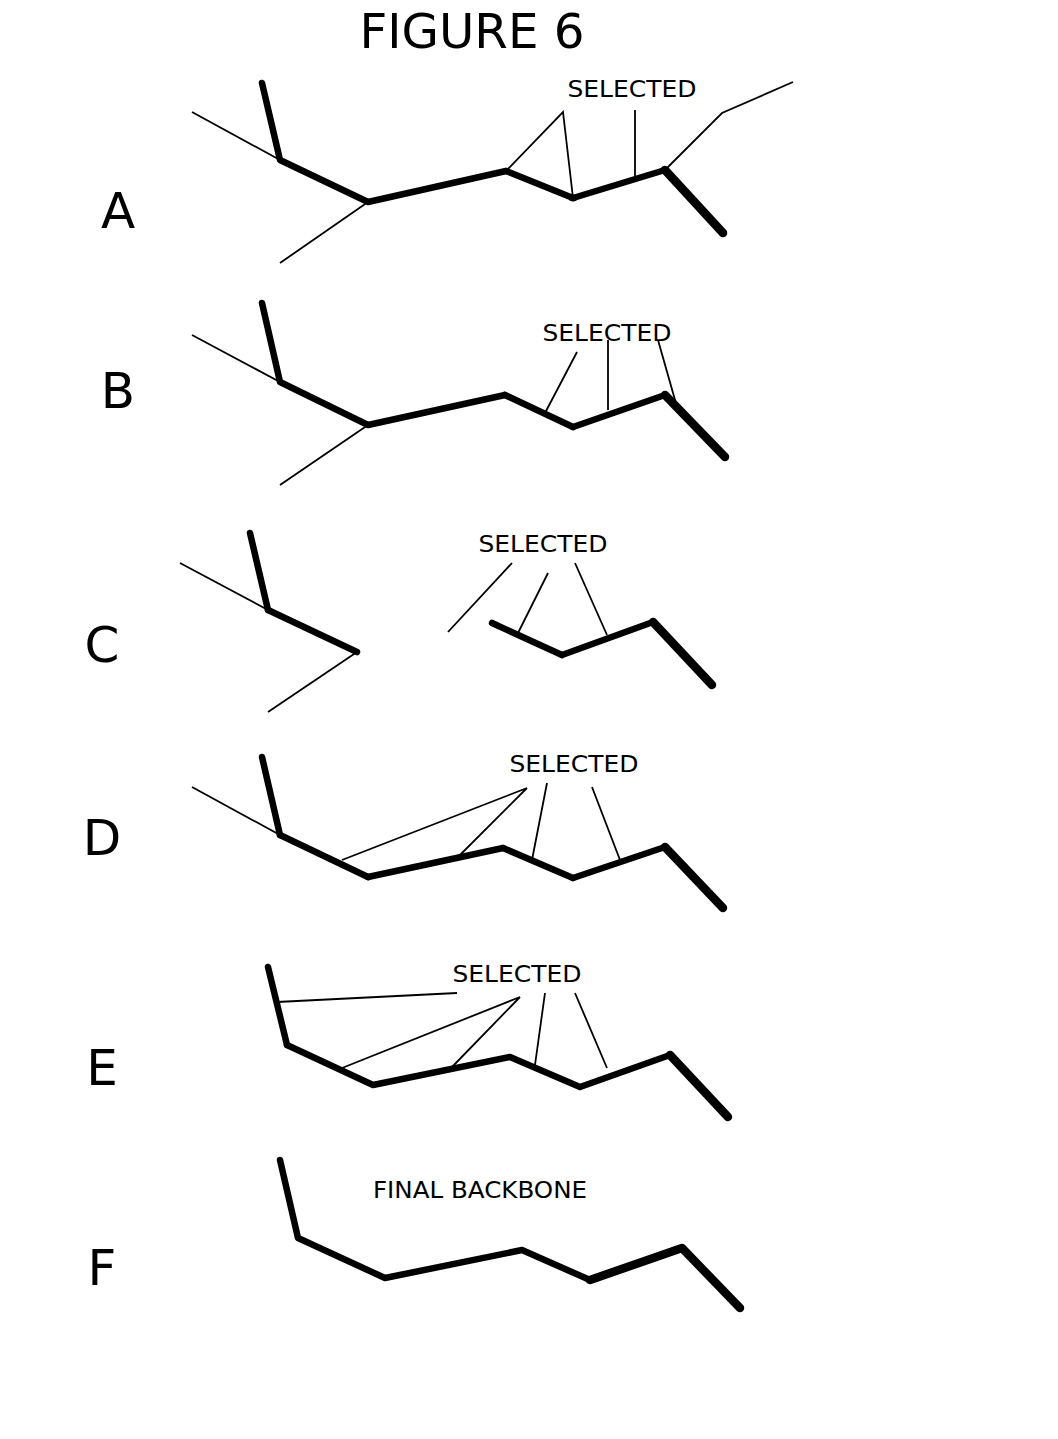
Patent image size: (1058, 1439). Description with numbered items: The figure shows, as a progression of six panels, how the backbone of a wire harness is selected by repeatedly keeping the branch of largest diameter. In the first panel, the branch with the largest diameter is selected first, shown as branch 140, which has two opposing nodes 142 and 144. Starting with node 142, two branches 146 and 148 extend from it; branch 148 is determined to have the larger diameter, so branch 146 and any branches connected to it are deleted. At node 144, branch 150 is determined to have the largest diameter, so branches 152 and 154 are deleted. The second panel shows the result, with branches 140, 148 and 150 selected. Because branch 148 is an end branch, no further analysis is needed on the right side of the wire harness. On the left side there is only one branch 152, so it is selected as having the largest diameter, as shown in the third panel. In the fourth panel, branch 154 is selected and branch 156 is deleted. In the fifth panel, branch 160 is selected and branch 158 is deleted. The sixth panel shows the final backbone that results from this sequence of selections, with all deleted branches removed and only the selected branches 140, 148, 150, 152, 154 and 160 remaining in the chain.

The branch 140 is at (618, 190).
The node 142 is at (663, 182).
The node 144 is at (566, 204).
The branch 146 is at (704, 133).
The branch 148 is at (708, 210).
The branch 150 is at (518, 181).
The branch 152 is at (521, 154).
The branch 154 is at (310, 845).
The branch 156 is at (319, 679).
The branch 158 is at (223, 811).
The branch 160 is at (263, 980).